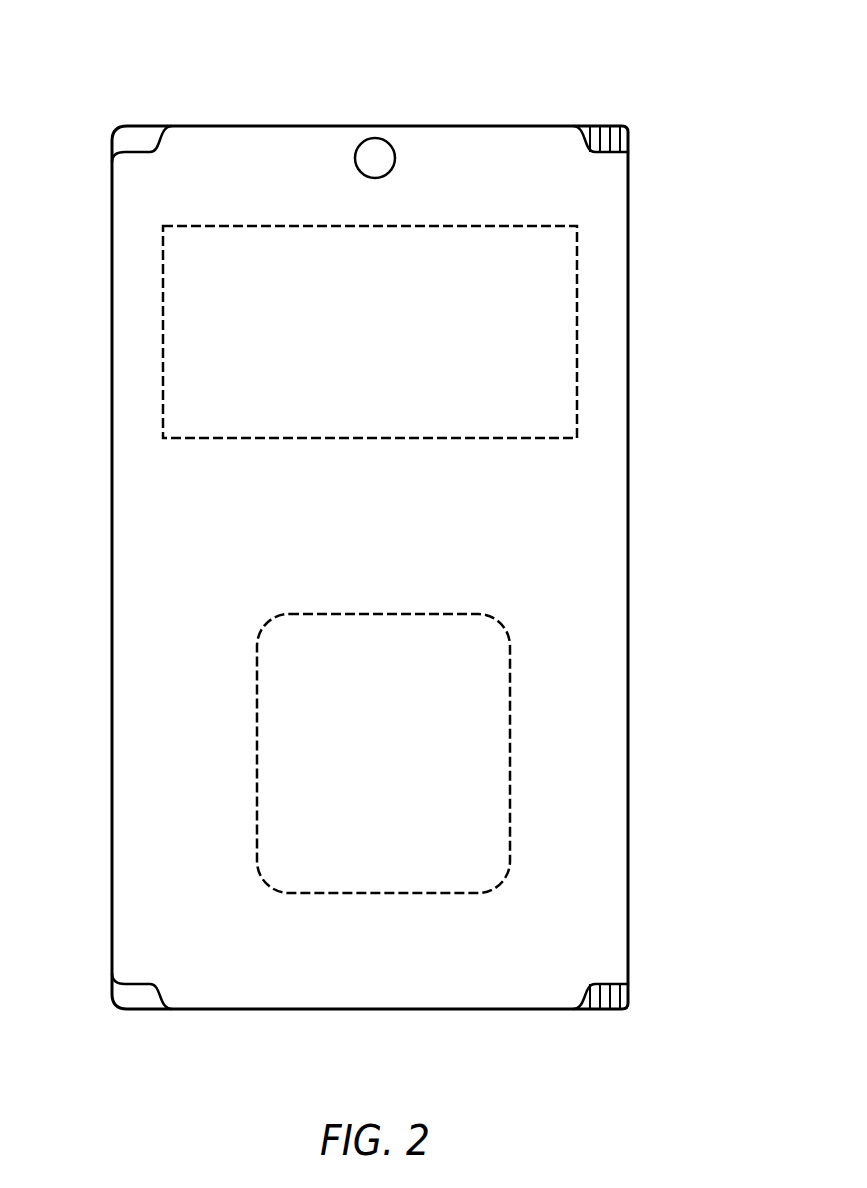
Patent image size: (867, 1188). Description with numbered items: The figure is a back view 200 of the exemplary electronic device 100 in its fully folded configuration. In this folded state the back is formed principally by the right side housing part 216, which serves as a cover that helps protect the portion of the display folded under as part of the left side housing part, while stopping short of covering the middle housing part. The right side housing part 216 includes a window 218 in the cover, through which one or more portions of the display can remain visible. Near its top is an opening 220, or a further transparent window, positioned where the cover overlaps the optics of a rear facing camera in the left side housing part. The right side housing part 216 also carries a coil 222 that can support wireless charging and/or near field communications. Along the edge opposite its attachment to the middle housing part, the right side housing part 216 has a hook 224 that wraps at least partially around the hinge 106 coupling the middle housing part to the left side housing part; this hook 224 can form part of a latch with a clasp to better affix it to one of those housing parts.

The electronic device 100 is at (373, 1010).
The hinge 106 is at (622, 137).
The back view 200 is at (674, 42).
The right side housing part 216 is at (120, 570).
The window 218 is at (370, 439).
The opening 220 is at (376, 138).
The coil 222 is at (386, 614).
The hook 224 is at (613, 563).